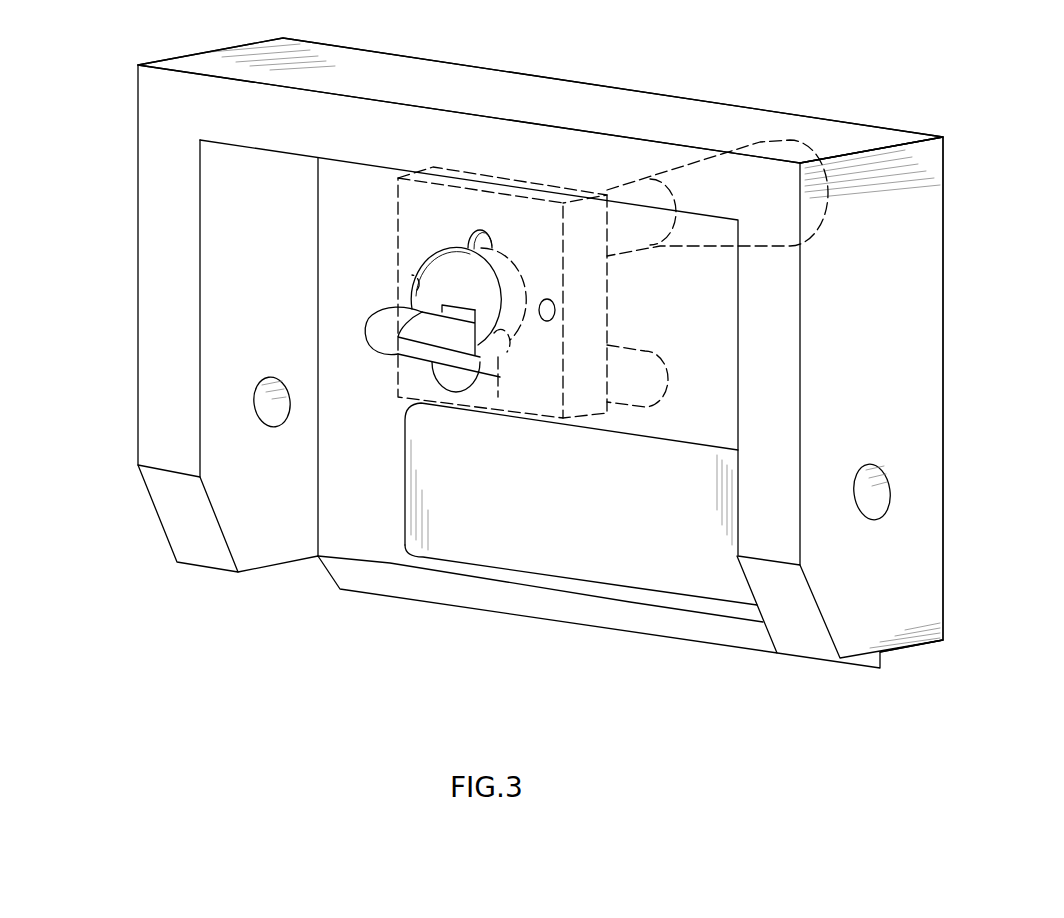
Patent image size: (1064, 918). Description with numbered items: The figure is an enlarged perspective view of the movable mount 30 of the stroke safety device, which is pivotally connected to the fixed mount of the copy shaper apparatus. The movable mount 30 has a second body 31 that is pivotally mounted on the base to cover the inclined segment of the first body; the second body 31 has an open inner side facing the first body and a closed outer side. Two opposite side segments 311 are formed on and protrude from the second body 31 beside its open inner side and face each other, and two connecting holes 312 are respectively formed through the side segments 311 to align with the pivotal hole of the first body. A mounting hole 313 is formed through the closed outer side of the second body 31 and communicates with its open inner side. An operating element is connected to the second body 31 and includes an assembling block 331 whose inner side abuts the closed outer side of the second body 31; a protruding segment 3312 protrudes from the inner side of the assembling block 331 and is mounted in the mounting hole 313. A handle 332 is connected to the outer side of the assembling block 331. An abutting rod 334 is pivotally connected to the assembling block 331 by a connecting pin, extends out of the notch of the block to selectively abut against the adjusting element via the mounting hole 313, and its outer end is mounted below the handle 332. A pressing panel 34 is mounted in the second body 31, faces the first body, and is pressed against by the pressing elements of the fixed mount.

The movable mount 30 is at (818, 112).
The second body 31 is at (535, 82).
The side segments 311 is at (908, 373).
The connecting holes 312 is at (877, 492).
The mounting hole 313 is at (425, 273).
The assembling block 331 is at (537, 183).
The protruding segment 3312 is at (427, 297).
The handle 332 is at (827, 197).
The abutting rod 334 is at (392, 332).
The pressing panel 34 is at (470, 548).